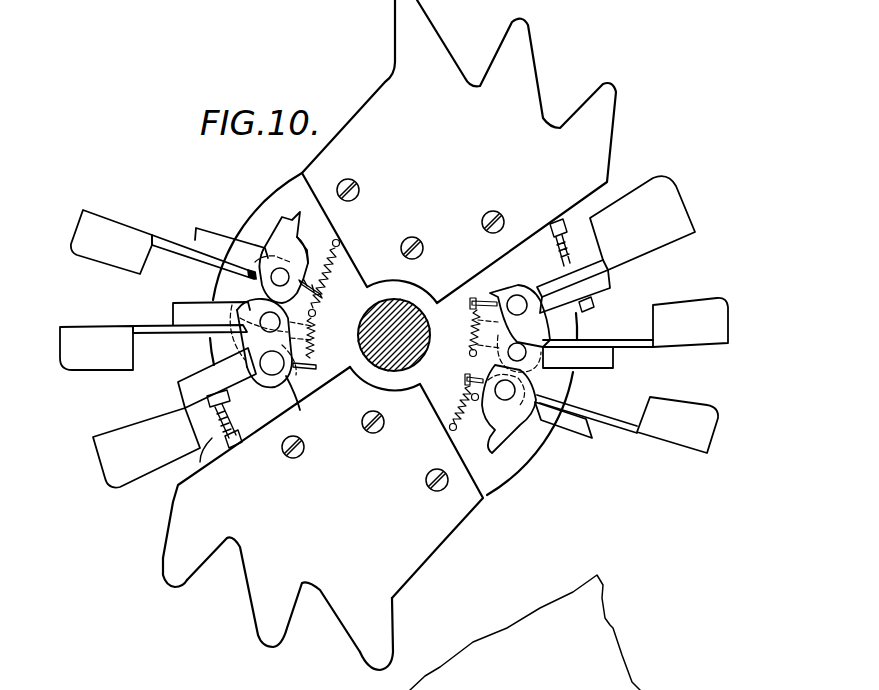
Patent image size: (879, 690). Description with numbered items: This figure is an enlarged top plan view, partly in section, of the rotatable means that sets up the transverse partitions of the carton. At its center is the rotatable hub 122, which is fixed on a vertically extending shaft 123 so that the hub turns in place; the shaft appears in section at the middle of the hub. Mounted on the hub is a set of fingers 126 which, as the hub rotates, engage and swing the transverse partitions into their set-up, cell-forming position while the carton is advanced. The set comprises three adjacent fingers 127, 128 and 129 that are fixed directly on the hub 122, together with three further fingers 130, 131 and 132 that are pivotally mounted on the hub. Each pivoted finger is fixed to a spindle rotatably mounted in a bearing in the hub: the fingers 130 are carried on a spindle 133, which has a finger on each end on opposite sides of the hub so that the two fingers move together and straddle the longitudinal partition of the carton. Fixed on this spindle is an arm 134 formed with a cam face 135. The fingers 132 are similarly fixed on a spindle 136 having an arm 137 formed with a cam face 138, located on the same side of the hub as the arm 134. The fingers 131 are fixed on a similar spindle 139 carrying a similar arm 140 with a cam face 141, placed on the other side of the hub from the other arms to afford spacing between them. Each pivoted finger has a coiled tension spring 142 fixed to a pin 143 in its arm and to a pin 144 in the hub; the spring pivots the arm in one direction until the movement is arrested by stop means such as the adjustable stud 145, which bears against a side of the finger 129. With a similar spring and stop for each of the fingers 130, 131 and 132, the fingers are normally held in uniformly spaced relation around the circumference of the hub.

The rotatable hub 122 is at (527, 452).
The vertically extending shaft 123 is at (410, 329).
The set of fingers 126 is at (66, 224).
The finger 127 is at (362, 652).
The finger 128 is at (263, 638).
The finger 129 is at (187, 582).
The finger 130 is at (111, 485).
The finger 131 is at (76, 372).
The finger 132 is at (104, 263).
The spindle 133 is at (272, 371).
The arm 134 is at (291, 378).
The cam face 135 is at (237, 340).
The spindle 136 is at (278, 270).
The arm 137 is at (294, 248).
The cam face 138 is at (266, 233).
The spindle 139 is at (258, 304).
The arm 140 is at (316, 338).
The cam face 141 is at (214, 263).
The coiled tension spring 142 is at (318, 327).
The pin 143 is at (308, 367).
The pin 144 is at (318, 309).
The adjustable stud 145 is at (200, 462).